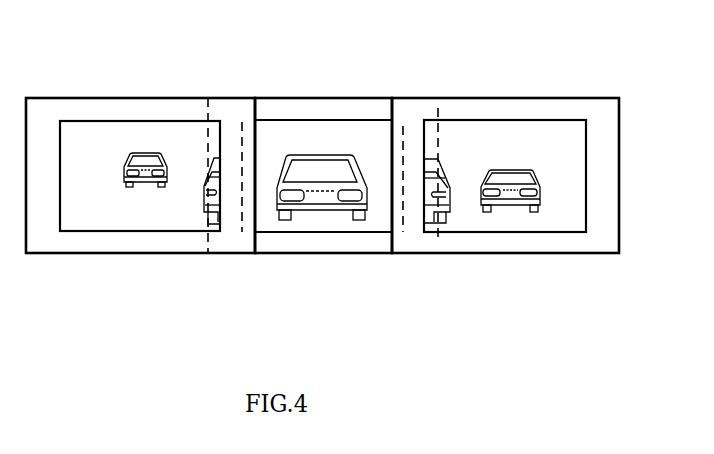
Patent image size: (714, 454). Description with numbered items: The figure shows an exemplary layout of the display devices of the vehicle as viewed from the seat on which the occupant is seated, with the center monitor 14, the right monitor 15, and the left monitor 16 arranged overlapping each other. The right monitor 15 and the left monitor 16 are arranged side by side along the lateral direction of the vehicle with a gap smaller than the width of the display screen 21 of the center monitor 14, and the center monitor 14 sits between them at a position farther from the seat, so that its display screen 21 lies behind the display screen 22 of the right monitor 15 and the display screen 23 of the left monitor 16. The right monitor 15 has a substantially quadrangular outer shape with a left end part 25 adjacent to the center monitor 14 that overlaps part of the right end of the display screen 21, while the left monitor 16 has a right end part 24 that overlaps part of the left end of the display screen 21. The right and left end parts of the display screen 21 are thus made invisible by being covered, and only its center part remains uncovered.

The center monitor 14 is at (323, 98).
The right monitor 15 is at (517, 98).
The left monitor 16 is at (130, 98).
The display screen of the center monitor 21 is at (320, 217).
The display screen of the right monitor 22 is at (527, 217).
The display screen of the left monitor 23 is at (117, 217).
The right end part 24 is at (230, 185).
The left end part 25 is at (412, 172).